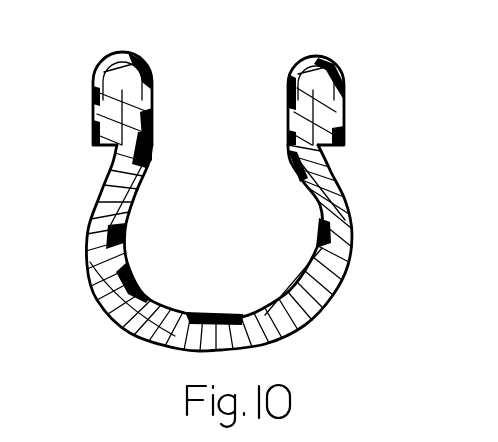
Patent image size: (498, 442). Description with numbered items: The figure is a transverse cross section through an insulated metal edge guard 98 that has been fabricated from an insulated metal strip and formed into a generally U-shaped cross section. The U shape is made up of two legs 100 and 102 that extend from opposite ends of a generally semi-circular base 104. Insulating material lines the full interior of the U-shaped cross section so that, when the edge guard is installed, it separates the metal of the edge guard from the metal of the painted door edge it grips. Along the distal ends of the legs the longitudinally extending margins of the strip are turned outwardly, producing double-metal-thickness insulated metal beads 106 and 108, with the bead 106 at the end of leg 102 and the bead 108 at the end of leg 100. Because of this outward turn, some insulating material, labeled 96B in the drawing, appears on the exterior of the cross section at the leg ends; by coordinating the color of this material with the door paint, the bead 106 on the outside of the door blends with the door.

The insulated metal edge guard 98 is at (223, 196).
The leg 100 is at (345, 213).
The leg 102 is at (100, 193).
The generally semi-circular base 104 is at (233, 351).
The insulated metal bead 106 is at (93, 83).
The insulated metal bead 108 is at (338, 77).
The hook surface 96B is at (338, 121).